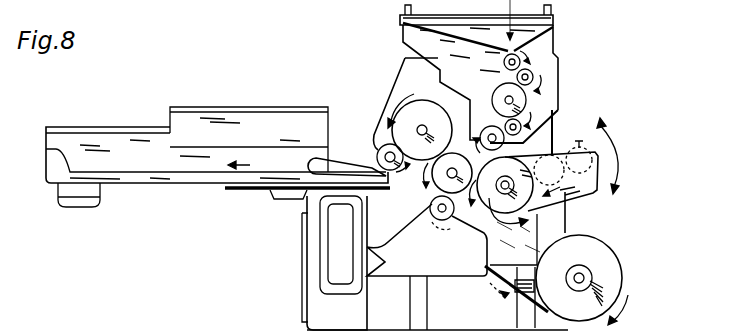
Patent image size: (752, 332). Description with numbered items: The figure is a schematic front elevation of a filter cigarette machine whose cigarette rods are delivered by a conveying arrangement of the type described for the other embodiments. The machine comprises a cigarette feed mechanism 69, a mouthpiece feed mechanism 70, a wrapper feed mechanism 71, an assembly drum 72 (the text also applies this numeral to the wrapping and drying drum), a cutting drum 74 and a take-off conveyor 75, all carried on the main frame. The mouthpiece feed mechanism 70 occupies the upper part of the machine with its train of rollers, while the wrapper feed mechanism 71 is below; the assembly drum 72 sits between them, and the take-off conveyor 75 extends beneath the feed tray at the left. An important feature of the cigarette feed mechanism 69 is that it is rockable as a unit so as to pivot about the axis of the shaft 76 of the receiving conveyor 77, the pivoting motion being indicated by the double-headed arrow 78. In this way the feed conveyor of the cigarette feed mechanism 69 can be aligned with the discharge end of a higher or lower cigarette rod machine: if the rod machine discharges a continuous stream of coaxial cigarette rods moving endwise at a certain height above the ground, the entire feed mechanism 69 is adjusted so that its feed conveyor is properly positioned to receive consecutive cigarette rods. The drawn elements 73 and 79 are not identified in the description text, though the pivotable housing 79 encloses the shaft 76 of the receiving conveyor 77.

The cigarette feed mechanism 69 is at (537, 141).
The mouthpiece feed mechanism 70 is at (546, 52).
The wrapper feed mechanism 71 is at (449, 246).
The assembly drum 72 is at (438, 184).
The large roller 73 is at (435, 96).
The cutting drum 74 is at (378, 150).
The take-off conveyor 75 is at (237, 200).
The shaft 76 is at (503, 180).
The receiving conveyor 77 is at (522, 212).
The double-headed arrow 78 is at (606, 163).
The pivotable housing 79 is at (559, 140).